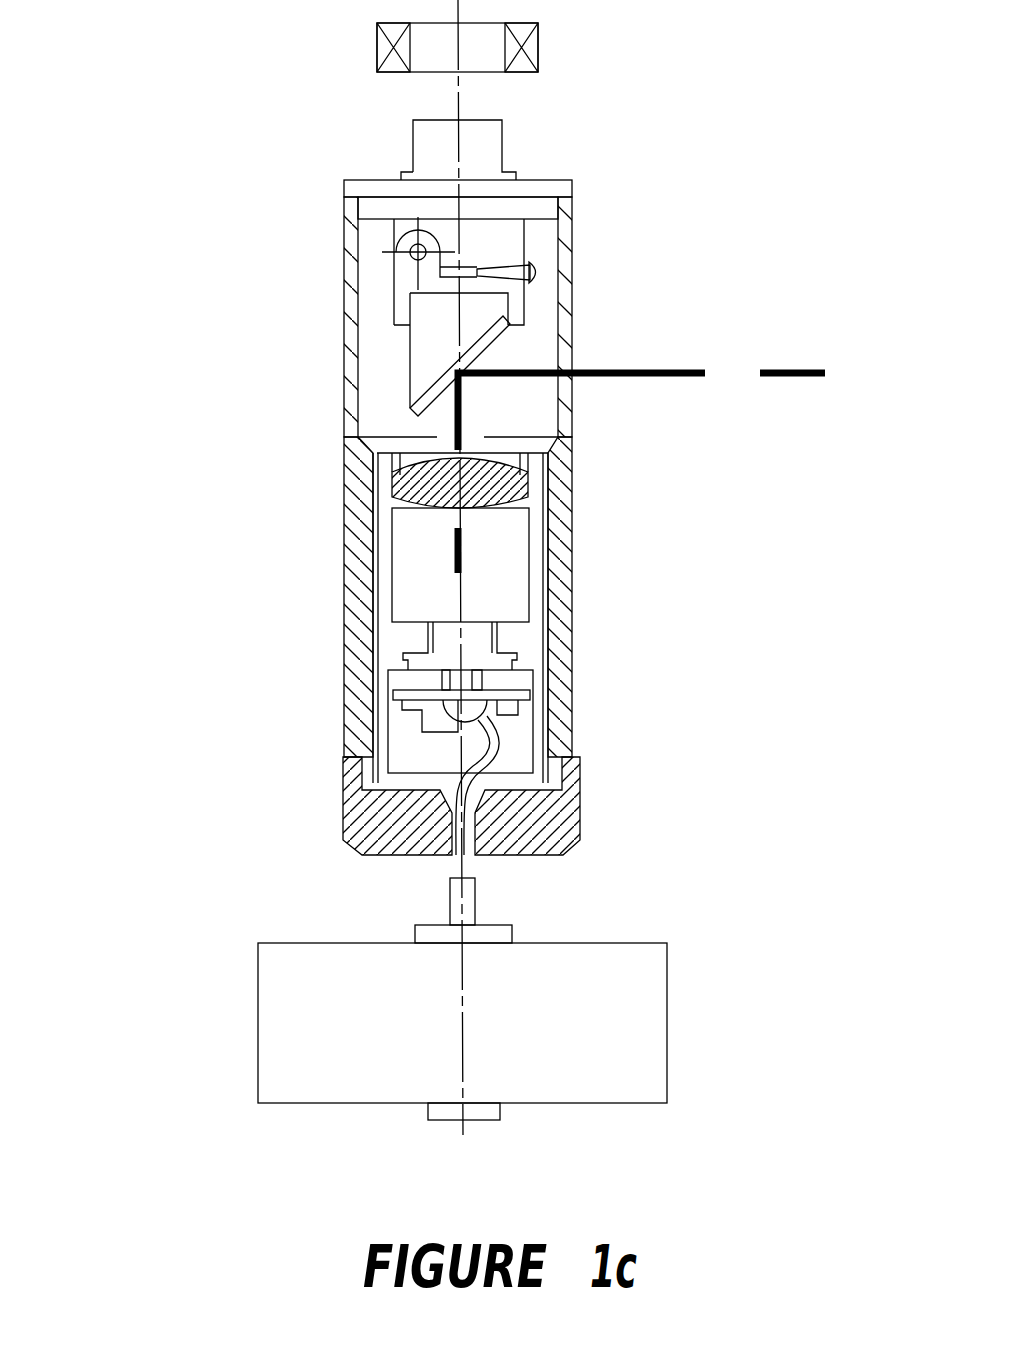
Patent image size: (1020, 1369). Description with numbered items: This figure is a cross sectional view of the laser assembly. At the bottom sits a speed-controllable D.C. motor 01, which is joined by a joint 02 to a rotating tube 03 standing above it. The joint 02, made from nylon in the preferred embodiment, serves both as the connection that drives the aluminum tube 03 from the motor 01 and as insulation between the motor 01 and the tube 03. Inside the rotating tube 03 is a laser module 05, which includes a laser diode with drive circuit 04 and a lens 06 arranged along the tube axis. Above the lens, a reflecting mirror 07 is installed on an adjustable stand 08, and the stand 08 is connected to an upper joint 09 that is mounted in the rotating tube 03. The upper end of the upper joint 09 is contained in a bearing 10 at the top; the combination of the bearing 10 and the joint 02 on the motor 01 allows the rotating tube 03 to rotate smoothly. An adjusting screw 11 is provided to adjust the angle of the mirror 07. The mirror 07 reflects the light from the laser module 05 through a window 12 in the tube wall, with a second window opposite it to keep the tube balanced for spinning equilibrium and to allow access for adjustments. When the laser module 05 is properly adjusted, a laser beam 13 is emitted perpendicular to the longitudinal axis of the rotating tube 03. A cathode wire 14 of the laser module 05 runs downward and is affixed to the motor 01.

The speed-controllable D.C. motor 01 is at (293, 1010).
The joint 02 is at (357, 815).
The rotating tube 03 is at (357, 730).
The laser diode with drive circuit 04 is at (447, 643).
The laser module 05 is at (383, 563).
The lens 06 is at (412, 487).
The reflecting mirror 07 is at (445, 380).
The adjustable stand 08 is at (408, 280).
The upper joint 09 is at (438, 163).
The bearing 10 is at (530, 45).
The adjusting screw 11 is at (527, 268).
The window 12 is at (567, 358).
The laser beam 13 is at (607, 377).
The cathode wire 14 is at (497, 753).